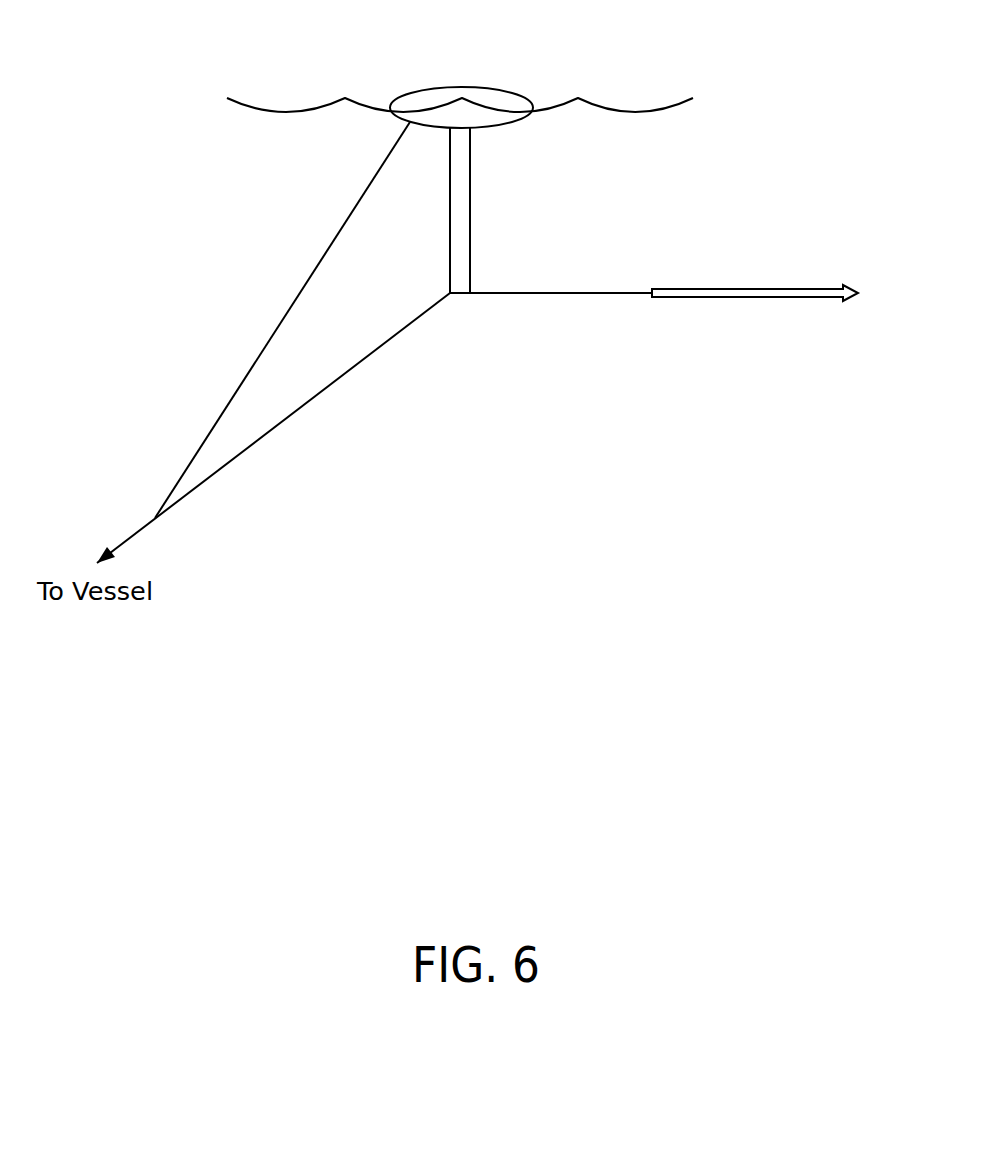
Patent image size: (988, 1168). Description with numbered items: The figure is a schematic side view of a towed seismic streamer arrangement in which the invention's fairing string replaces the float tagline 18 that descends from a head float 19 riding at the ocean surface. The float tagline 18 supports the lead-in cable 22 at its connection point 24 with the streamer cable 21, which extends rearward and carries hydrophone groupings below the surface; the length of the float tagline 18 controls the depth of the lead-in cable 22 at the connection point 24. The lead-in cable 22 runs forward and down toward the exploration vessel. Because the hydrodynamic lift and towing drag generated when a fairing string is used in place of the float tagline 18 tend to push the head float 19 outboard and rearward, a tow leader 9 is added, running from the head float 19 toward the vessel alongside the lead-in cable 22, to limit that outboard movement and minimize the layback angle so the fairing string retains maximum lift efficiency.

The head float 19 is at (473, 87).
The float tagline 18 is at (477, 222).
The streamer cable 21 is at (733, 297).
The connection point 24 is at (462, 300).
The lead-in cable 22 is at (310, 398).
The tow leader 9 is at (263, 348).